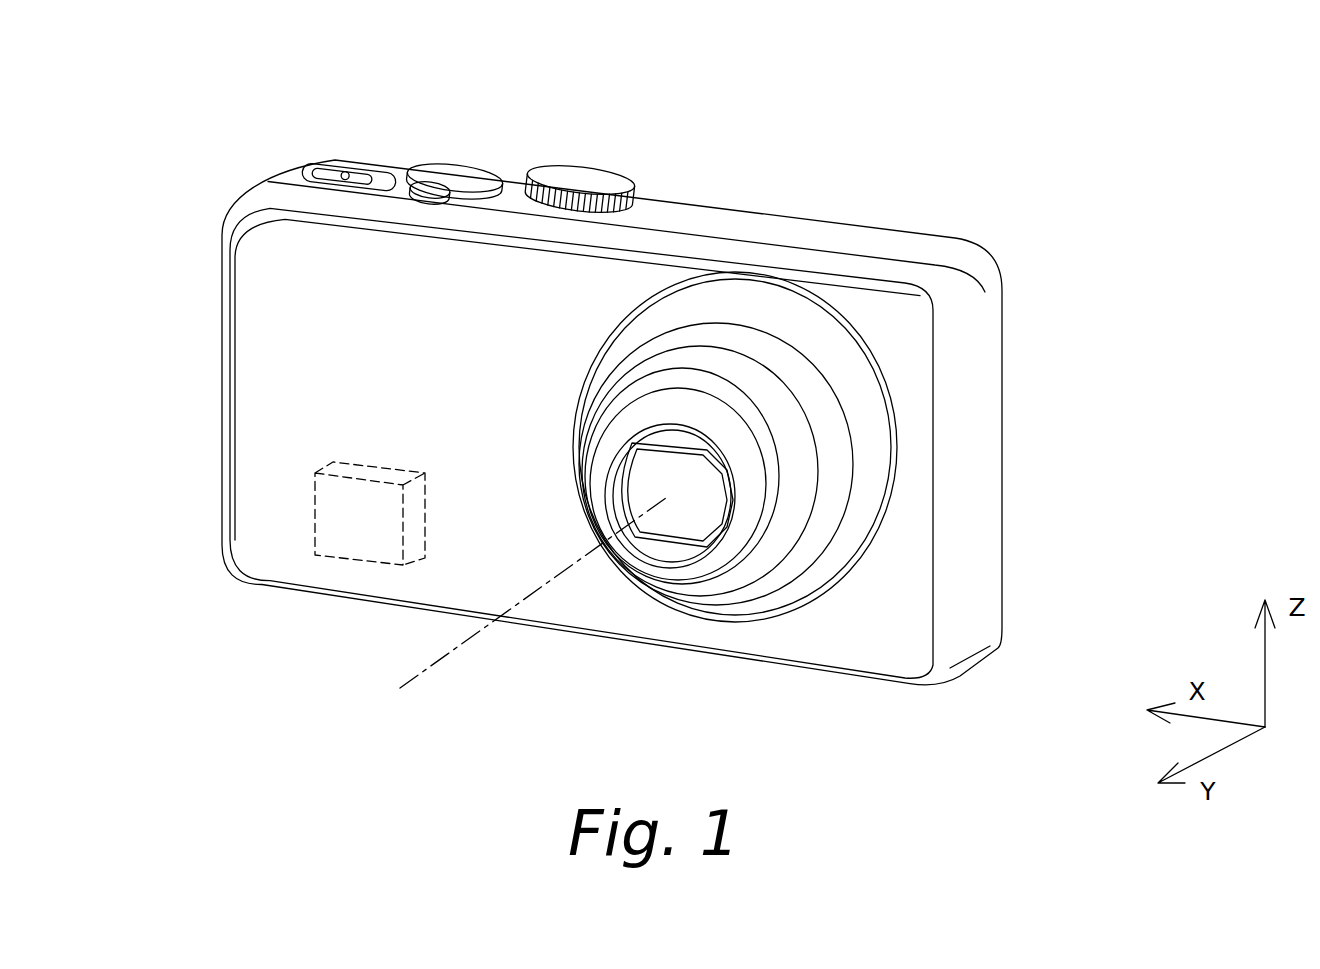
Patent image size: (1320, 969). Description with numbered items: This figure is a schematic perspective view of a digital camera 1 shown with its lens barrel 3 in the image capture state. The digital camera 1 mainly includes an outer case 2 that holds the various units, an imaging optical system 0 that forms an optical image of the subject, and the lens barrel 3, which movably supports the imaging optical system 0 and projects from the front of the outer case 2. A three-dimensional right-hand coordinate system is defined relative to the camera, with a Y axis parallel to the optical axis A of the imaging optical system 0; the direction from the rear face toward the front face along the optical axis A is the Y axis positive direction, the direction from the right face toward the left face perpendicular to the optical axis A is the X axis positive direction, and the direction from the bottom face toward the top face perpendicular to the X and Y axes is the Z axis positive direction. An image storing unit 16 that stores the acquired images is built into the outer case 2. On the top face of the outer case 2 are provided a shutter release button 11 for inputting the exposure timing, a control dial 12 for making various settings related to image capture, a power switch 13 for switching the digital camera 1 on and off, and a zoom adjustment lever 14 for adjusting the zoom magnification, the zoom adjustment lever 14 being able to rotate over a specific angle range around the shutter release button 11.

The digital camera 1 is at (675, 358).
The outer case 2 is at (873, 222).
The lens barrel 3 is at (667, 610).
The imaging optical system 0 is at (650, 541).
The optical axis A is at (518, 608).
The shutter release button 11 is at (455, 177).
The control dial 12 is at (590, 177).
The power switch 13 is at (342, 168).
The zoom adjustment lever 14 is at (427, 187).
The image storing unit 16 is at (333, 518).